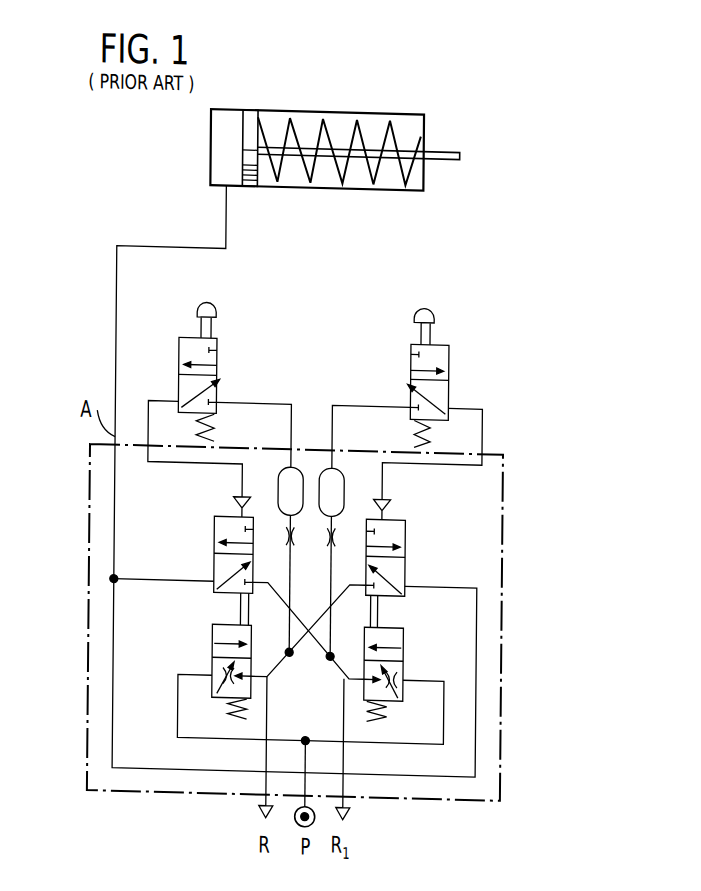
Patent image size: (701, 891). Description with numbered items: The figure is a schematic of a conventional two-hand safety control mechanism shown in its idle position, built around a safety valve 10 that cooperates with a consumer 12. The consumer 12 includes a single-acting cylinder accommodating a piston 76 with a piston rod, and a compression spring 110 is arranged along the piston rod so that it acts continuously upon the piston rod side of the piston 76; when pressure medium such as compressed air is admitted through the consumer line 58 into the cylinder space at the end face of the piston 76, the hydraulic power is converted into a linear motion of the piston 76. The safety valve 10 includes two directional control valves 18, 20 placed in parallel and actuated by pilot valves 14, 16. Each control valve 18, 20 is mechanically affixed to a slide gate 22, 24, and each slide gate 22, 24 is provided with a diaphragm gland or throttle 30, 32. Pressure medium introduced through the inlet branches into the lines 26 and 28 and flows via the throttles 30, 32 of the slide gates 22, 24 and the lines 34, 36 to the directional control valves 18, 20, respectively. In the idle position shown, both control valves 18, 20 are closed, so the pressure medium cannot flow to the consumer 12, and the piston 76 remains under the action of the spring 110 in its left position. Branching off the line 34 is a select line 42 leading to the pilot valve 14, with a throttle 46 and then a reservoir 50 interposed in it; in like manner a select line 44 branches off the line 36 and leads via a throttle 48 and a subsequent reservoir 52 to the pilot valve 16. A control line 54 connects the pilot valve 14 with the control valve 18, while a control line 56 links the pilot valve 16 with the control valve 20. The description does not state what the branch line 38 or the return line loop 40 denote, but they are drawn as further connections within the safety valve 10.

The safety valve 10 is at (489, 441).
The consumer 12 is at (321, 106).
The pilot valve 14 is at (184, 340).
The pilot valve 16 is at (436, 341).
The directional control valve 18 is at (214, 529).
The directional control valve 20 is at (404, 564).
The slide gate 22 is at (222, 690).
The slide gate 24 is at (394, 685).
The line 26 is at (211, 735).
The line 28 is at (396, 737).
The throttle 30 is at (225, 673).
The throttle 32 is at (395, 670).
The line 34 is at (290, 652).
The line 36 is at (320, 647).
The branch line to valve 18 38 is at (144, 575).
The return line loop 40 is at (478, 714).
The select line 42 is at (258, 397).
The select line 44 is at (371, 398).
The throttle 46 is at (287, 532).
The throttle 48 is at (329, 531).
The reservoir 50 is at (280, 484).
The reservoir 52 is at (345, 480).
The control line 54 is at (147, 410).
The control line 56 is at (462, 398).
The consumer line 58 is at (156, 245).
The piston 76 is at (247, 113).
The compression spring 110 is at (390, 134).